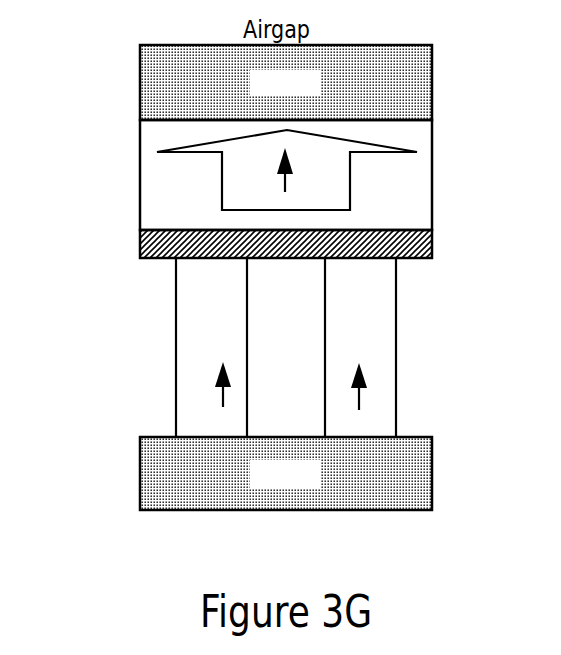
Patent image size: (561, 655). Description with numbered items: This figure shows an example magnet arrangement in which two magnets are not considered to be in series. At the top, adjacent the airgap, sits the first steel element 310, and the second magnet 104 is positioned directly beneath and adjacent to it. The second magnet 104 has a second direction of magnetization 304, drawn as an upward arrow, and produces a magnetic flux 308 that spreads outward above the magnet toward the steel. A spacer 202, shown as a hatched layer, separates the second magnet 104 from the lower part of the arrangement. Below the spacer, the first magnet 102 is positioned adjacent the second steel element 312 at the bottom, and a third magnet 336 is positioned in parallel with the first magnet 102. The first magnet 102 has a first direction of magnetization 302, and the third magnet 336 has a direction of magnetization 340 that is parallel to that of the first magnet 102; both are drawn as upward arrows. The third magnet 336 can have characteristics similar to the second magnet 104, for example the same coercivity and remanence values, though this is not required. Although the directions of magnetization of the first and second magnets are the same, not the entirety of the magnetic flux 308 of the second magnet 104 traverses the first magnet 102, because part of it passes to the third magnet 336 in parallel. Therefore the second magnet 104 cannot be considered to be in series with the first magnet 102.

The first steel element 310 is at (140, 85).
The second magnet 104 is at (140, 176).
The magnetic flux 308 is at (222, 198).
The second direction of magnetization 304 is at (285, 186).
The spacer 202 is at (140, 243).
The first magnet 102 is at (396, 345).
The third magnet 336 is at (176, 378).
The direction of magnetization 340 is at (223, 397).
The first direction of magnetization 302 is at (359, 400).
The second steel element 312 is at (140, 477).